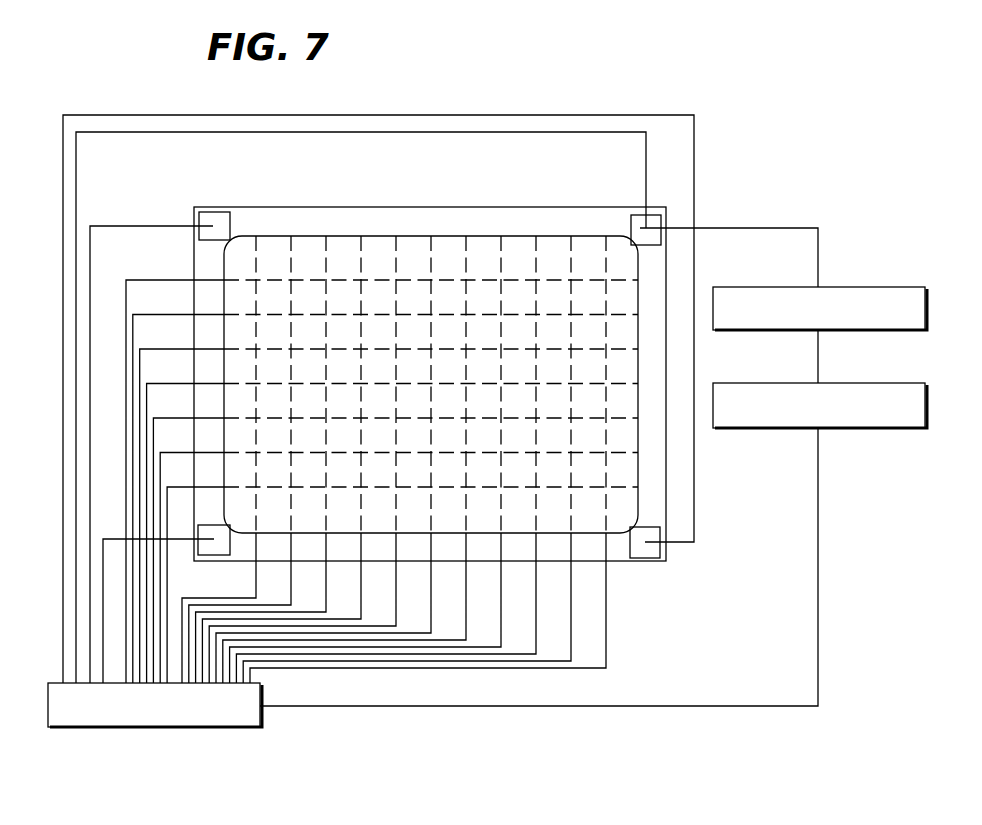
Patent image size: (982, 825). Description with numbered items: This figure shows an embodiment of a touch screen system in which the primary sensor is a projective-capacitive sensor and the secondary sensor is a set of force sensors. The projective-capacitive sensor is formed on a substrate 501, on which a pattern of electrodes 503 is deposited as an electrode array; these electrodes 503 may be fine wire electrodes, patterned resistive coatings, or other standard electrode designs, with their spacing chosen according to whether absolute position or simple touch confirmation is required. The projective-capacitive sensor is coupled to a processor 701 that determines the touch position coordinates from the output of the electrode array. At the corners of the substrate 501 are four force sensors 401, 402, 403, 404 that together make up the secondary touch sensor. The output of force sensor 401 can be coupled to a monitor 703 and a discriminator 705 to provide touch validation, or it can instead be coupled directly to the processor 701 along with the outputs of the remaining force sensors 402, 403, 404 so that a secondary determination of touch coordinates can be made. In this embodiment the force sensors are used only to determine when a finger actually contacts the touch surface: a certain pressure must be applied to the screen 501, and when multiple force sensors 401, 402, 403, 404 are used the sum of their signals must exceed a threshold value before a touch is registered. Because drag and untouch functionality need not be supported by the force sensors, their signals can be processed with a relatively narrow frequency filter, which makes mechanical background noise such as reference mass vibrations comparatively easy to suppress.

The force sensor 401 is at (634, 226).
The force sensor 402 is at (213, 222).
The force sensor 403 is at (207, 551).
The force sensor 404 is at (640, 552).
The substrate 501 is at (447, 255).
The electrodes 503 is at (603, 418).
The processor 701 is at (168, 730).
The monitor 703 is at (845, 287).
The discriminator 705 is at (845, 383).